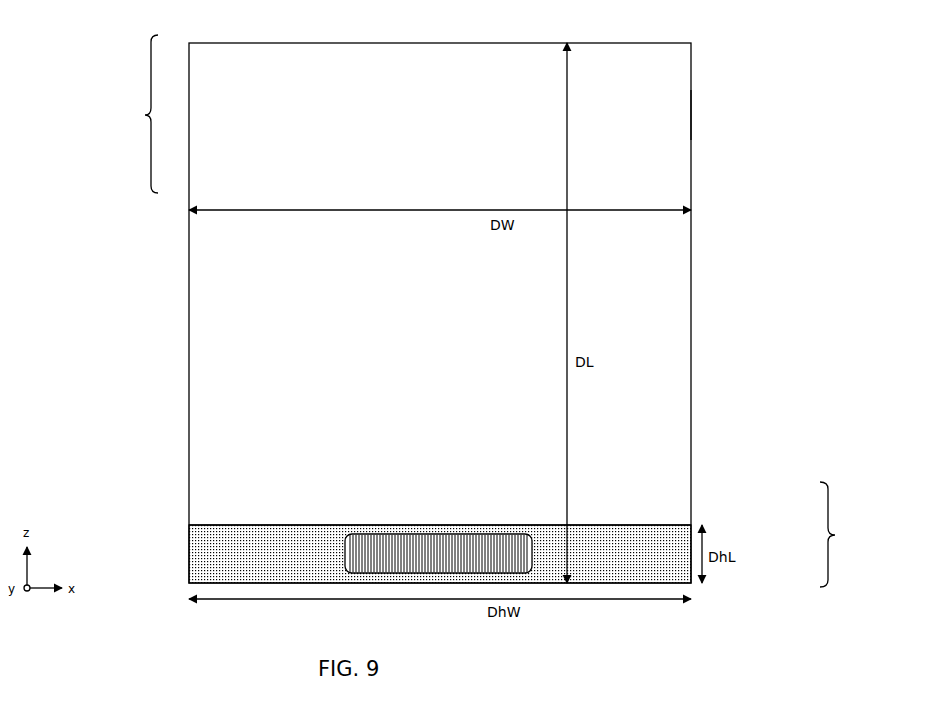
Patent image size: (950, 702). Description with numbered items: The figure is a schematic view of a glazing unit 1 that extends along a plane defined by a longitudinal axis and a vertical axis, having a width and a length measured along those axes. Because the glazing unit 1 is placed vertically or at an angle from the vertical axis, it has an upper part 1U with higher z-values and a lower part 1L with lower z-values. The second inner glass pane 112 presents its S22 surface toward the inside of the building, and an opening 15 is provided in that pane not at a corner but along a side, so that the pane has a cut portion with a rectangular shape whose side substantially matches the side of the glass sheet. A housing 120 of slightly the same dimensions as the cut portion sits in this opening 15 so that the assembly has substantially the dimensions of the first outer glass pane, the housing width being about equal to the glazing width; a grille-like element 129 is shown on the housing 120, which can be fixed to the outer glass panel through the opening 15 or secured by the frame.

The glazing unit 1 is at (491, 319).
The S22 surface S22 is at (681, 120).
The second inner glass pane 112 is at (691, 179).
The opening 15 is at (215, 524).
The speaker opening 129 is at (362, 554).
The lower housing portion 120 is at (465, 552).
The upper part 1U is at (145, 115).
The lower part 1L is at (835, 535).